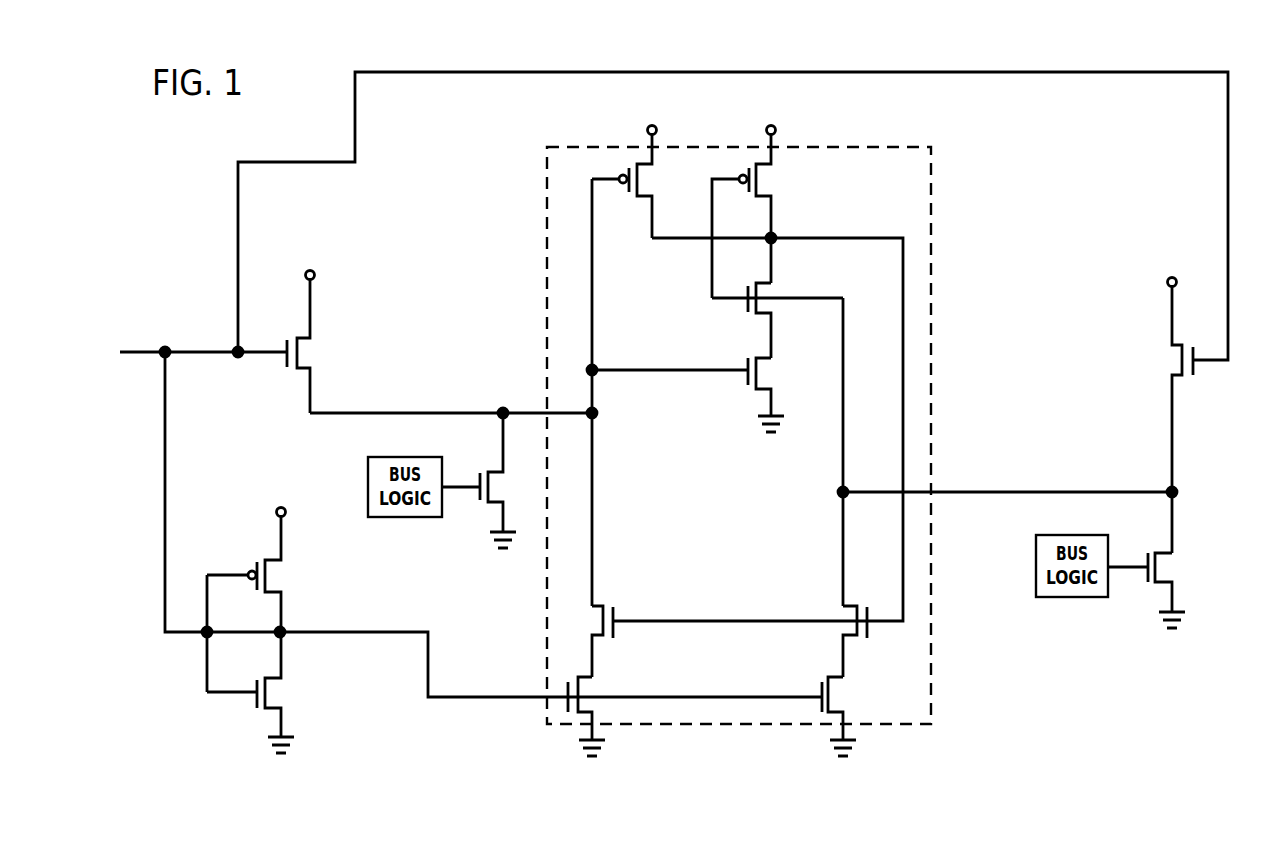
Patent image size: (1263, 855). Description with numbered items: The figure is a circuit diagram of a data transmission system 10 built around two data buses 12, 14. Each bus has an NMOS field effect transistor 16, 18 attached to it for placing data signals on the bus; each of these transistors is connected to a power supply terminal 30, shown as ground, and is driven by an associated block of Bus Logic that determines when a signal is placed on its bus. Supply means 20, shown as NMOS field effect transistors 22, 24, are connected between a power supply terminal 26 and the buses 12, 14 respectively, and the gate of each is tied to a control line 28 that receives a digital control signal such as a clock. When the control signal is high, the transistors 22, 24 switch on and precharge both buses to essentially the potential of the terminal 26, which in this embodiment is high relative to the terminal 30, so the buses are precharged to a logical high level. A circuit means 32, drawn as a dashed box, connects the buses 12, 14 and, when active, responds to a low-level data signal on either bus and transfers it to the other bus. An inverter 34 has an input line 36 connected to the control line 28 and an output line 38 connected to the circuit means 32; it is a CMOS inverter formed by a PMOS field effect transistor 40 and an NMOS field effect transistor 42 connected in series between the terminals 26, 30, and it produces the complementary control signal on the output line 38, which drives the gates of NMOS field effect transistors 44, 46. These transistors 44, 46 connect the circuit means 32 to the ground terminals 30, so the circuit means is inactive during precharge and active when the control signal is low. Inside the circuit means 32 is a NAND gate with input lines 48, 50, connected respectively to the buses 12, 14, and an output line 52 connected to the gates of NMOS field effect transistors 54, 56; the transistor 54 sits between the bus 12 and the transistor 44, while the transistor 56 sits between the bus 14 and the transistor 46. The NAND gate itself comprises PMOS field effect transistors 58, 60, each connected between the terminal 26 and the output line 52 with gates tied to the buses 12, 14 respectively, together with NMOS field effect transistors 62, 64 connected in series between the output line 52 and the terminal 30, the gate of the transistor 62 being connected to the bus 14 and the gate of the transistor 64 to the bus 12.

The data transmission system 10 is at (188, 192).
The data bus 12 is at (380, 413).
The data bus 14 is at (1028, 492).
The NMOS field effect transistor 16 is at (495, 500).
The NMOS field effect transistor 18 is at (1165, 580).
The supply means 20 is at (340, 288).
The NMOS field effect transistor 22 is at (304, 367).
The NMOS field effect transistor 24 is at (1170, 372).
The power supply terminal 26 is at (310, 270).
The control line 28 is at (133, 352).
The power supply terminal 30 is at (495, 531).
The circuit means 32 is at (862, 146).
The inverter 34 is at (198, 708).
The input line 36 is at (185, 634).
The output line 38 is at (312, 632).
The PMOS field effect transistor 40 is at (276, 591).
The NMOS field effect transistor 42 is at (277, 707).
The NMOS field effect transistor 44 is at (578, 680).
The NMOS field effect transistor 46 is at (830, 680).
The input line 48 is at (594, 295).
The input line 50 is at (843, 461).
The output line 52 is at (903, 438).
The NMOS field effect transistor 54 is at (600, 606).
The NMOS field effect transistor 56 is at (855, 641).
The PMOS field effect transistor 58 is at (641, 194).
The PMOS field effect transistor 60 is at (760, 194).
The NMOS field effect transistor 62 is at (757, 318).
The NMOS field effect transistor 64 is at (761, 386).